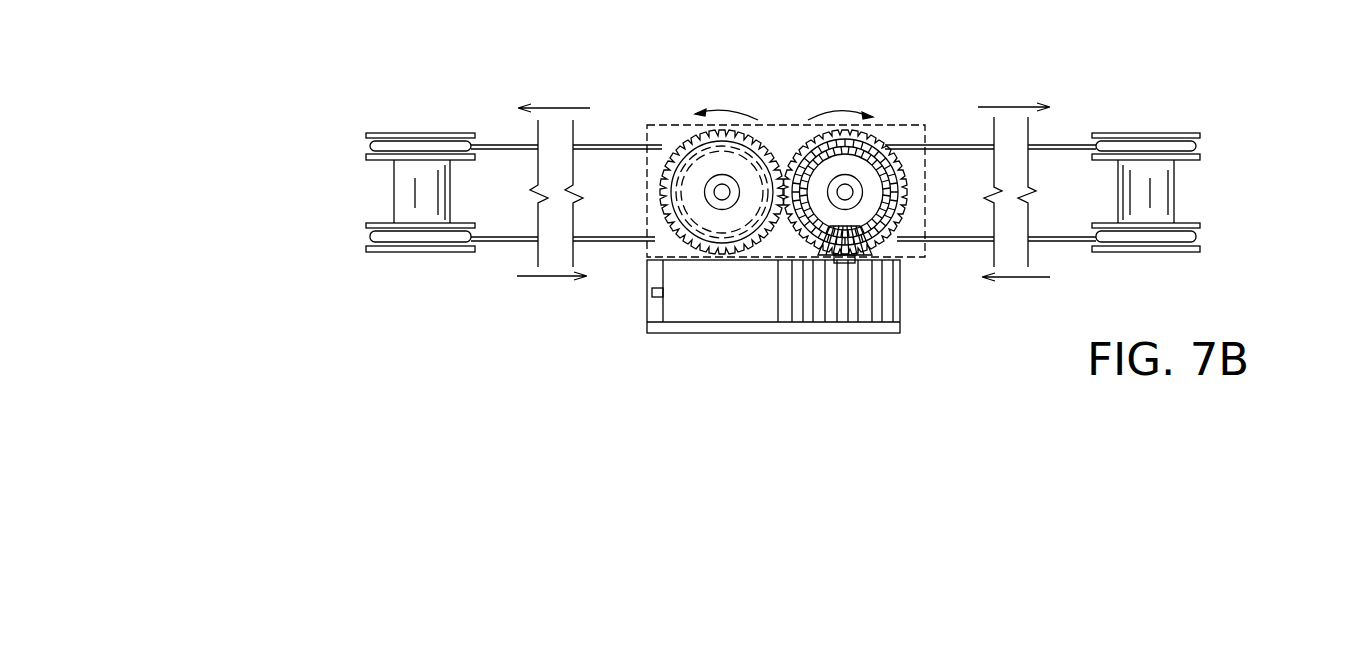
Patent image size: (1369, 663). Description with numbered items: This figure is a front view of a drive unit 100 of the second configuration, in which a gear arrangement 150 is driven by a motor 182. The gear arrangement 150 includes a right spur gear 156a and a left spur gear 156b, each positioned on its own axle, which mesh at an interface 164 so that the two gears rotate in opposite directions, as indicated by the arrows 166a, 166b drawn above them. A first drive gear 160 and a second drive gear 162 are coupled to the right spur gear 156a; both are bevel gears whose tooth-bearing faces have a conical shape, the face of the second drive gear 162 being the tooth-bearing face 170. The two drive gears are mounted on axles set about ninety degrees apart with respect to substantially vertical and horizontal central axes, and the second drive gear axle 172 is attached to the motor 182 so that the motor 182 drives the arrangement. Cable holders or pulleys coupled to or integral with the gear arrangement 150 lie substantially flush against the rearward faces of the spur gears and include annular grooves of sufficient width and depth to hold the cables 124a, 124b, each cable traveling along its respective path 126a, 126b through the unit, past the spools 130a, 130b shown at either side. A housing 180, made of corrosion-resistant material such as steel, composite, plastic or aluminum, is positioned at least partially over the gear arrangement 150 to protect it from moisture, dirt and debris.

The drive unit 100 is at (363, 367).
The cable 124a is at (1070, 241).
The cable 124b is at (497, 241).
The path 126a is at (1025, 100).
The path 126b is at (543, 100).
The first spool 130a is at (1193, 250).
The second spool 130b is at (377, 253).
The gear arrangement 150 is at (651, 106).
The right spur gear 156a is at (878, 141).
The left spur gear 156b is at (673, 228).
The first drive gear 160 is at (908, 210).
The second drive gear 162 is at (880, 252).
The interface 164 is at (783, 218).
The arrow 166a is at (833, 112).
The arrow 166b is at (732, 110).
The tooth-bearing face 170 is at (866, 258).
The second drive gear axle 172 is at (848, 232).
The housing 180 is at (648, 247).
The motor 182 is at (737, 335).